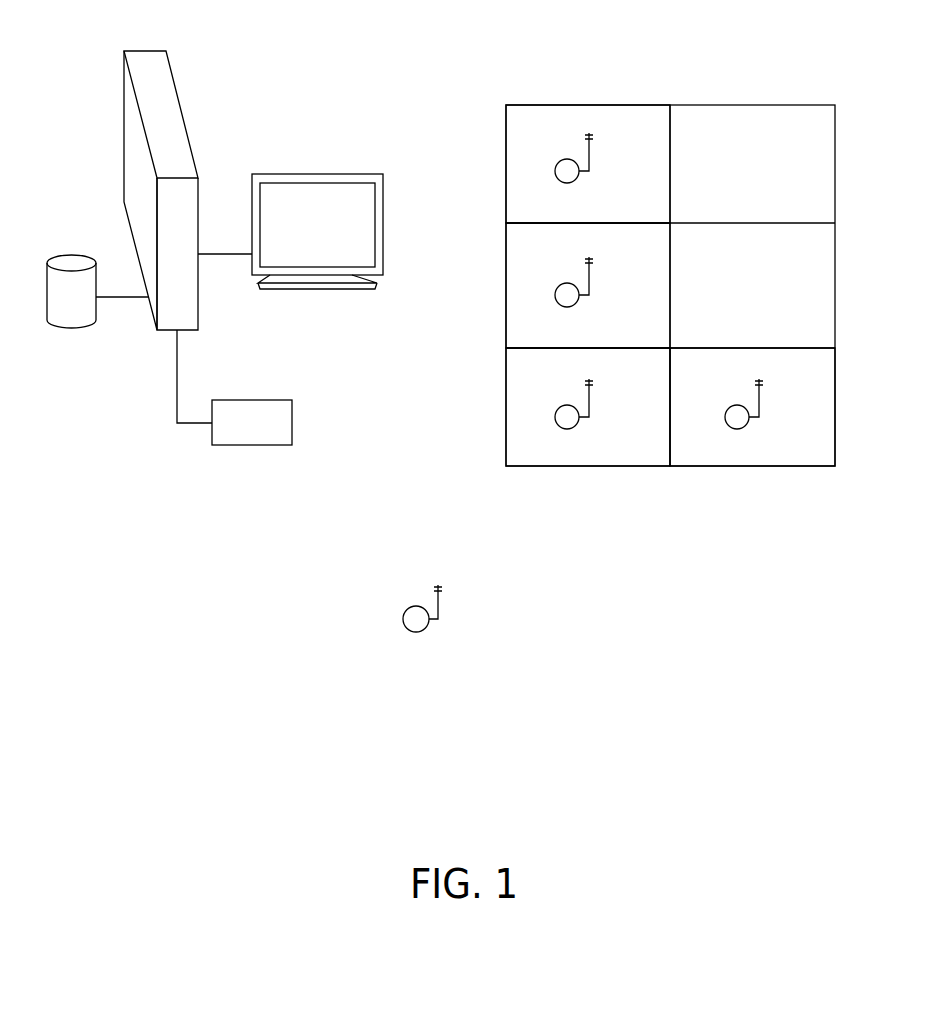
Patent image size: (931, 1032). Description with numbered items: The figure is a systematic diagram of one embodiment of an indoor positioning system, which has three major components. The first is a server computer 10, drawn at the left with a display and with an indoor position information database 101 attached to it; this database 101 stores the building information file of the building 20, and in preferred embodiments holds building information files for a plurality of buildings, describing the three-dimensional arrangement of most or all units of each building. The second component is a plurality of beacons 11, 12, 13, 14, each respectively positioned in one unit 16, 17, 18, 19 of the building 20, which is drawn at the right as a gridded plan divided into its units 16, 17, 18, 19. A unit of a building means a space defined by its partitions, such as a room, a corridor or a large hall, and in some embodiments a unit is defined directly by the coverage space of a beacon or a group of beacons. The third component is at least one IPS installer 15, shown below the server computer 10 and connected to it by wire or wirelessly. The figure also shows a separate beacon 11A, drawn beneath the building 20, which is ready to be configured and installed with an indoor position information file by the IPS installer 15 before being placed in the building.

The server computer 10 is at (165, 103).
The indoor position information database 101 is at (80, 263).
The IPS installer 15 is at (249, 430).
The building 20 is at (639, 102).
The unit 16 is at (515, 143).
The unit 17 is at (522, 265).
The unit 18 is at (517, 392).
The unit 19 is at (752, 458).
The beacon 11 is at (600, 185).
The beacon 12 is at (608, 298).
The beacon 13 is at (608, 418).
The beacon 14 is at (779, 419).
The beacon 11A is at (479, 616).